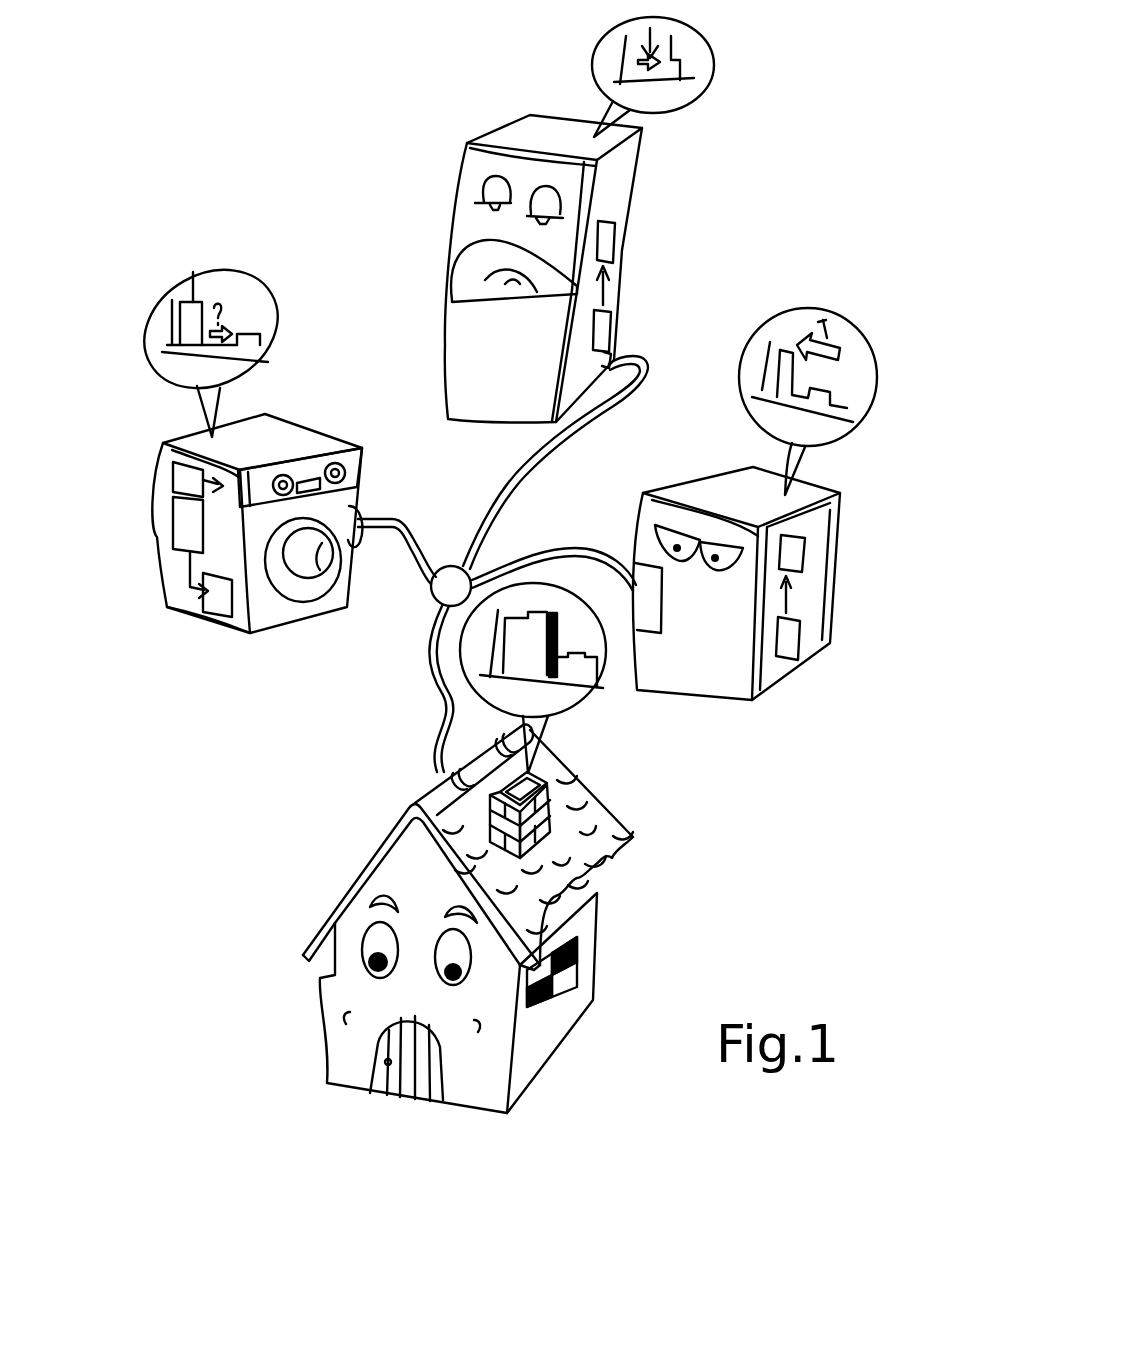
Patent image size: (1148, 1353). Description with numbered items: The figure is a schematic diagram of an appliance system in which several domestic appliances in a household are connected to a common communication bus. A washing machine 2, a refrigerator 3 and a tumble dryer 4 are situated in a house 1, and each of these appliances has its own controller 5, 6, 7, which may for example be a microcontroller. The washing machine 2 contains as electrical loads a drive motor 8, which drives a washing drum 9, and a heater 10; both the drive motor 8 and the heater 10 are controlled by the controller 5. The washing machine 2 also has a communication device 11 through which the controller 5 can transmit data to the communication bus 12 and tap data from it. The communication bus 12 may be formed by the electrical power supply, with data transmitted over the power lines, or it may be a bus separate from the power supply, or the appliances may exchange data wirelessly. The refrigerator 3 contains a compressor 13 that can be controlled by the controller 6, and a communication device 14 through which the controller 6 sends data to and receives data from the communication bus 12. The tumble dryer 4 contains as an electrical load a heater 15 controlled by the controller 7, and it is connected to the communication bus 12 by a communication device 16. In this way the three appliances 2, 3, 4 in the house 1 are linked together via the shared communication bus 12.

The house 1 is at (617, 850).
The washing machine 2 is at (172, 597).
The refrigerator 3 is at (617, 178).
The tumble dryer 4 is at (796, 591).
The controller 5 is at (182, 524).
The controller 6 is at (614, 320).
The controller 7 is at (787, 638).
The drive motor 8 is at (220, 598).
The washing drum 9 is at (303, 563).
The heater 10 is at (182, 478).
The communication device 11 is at (354, 512).
The communication bus 12 is at (451, 568).
The compressor 13 is at (614, 236).
The communication device 14 is at (614, 360).
The heater 15 is at (790, 546).
The communication device 16 is at (653, 608).